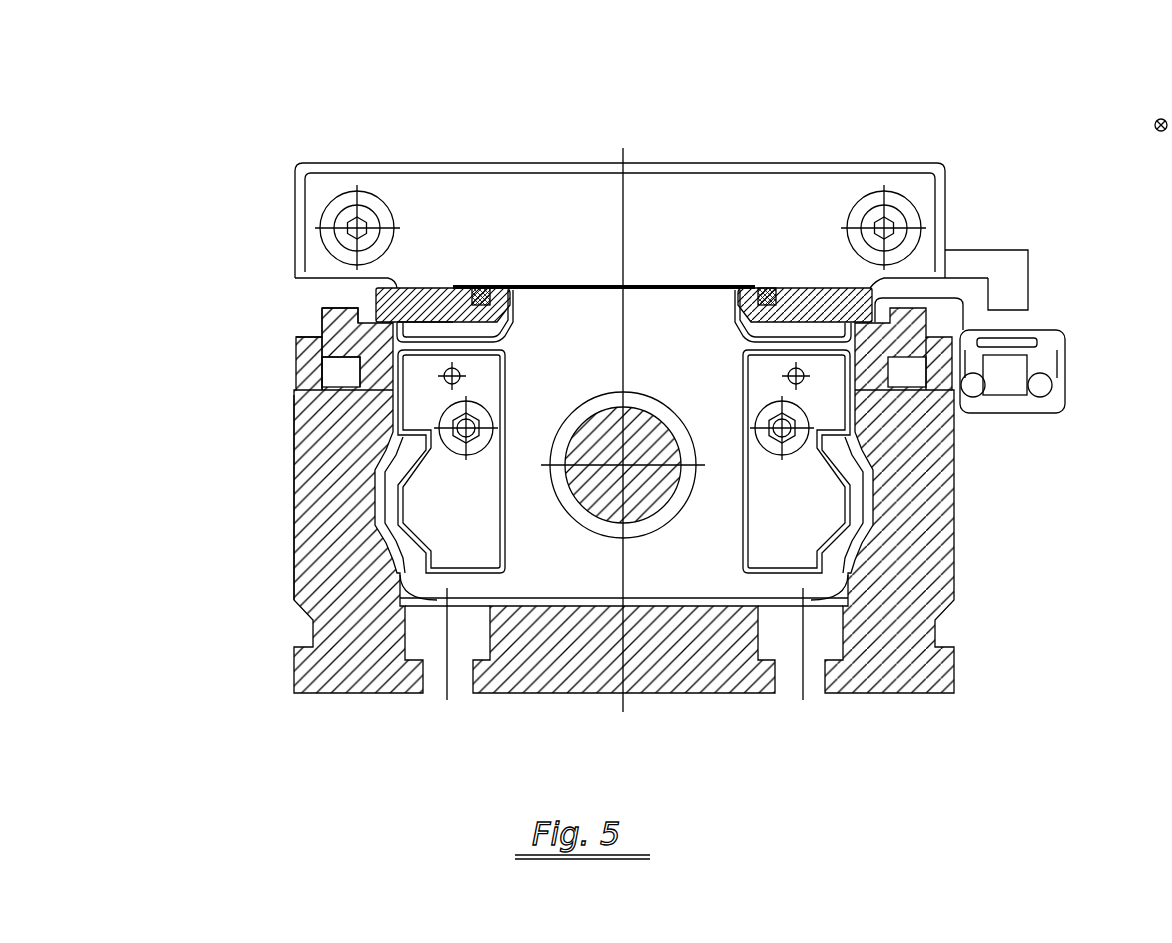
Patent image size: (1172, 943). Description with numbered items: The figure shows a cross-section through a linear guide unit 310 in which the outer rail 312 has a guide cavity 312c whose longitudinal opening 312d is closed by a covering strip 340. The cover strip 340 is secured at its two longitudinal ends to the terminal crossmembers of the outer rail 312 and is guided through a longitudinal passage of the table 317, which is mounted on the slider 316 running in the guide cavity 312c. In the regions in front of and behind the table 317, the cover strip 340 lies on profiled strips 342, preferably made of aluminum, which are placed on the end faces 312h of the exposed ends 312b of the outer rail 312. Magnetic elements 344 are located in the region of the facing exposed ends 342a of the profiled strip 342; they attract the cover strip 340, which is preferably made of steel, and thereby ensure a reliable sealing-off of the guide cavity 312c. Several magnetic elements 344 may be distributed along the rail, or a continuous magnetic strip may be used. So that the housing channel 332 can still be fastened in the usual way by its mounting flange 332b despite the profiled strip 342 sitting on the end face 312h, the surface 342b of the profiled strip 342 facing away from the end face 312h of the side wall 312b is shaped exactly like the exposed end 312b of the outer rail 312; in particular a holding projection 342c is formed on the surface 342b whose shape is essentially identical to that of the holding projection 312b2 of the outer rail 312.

The linear guide unit 310 is at (1045, 90).
The outer rail 312 is at (945, 520).
The exposed end 312b is at (303, 428).
The holding projection 312b2 is at (298, 327).
The end face 312h is at (292, 367).
The guide cavity 312c is at (548, 360).
The longitudinal opening 312d is at (668, 312).
The slider 316 is at (642, 355).
The table 317 is at (720, 283).
The housing channel 332 is at (1066, 350).
The mounting flange 332b is at (910, 302).
The cover strip 340 is at (775, 232).
The profiled strip 342 is at (397, 290).
The exposed end of the profiled strip 342a is at (443, 297).
The surface of the profiled strip 342b is at (312, 337).
The holding projection 342c is at (322, 308).
The magnetic element 344 is at (483, 283).